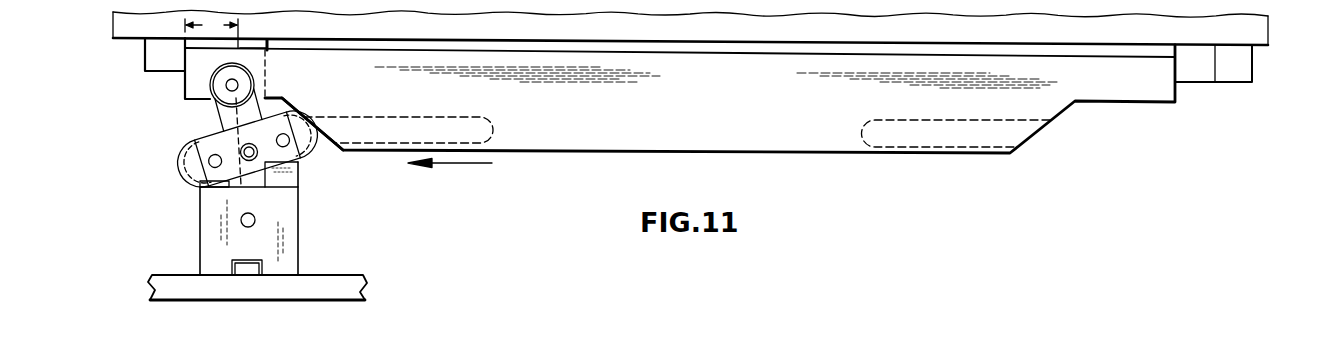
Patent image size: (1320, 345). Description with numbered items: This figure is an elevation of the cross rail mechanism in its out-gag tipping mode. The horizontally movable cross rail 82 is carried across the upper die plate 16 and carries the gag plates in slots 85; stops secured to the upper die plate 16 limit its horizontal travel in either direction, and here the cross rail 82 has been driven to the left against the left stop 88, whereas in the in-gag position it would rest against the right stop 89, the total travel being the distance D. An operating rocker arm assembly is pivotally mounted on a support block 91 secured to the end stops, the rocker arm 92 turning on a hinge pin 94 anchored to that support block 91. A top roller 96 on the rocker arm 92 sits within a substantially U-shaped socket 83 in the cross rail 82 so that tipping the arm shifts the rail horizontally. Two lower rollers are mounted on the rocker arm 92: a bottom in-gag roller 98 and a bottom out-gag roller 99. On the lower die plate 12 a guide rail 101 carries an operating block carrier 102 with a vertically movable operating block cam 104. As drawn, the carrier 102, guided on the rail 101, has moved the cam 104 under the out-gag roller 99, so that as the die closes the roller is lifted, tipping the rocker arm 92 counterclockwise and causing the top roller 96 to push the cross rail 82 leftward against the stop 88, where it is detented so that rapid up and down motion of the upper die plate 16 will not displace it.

The lower die plate 12 is at (343, 282).
The upper die plate 16 is at (560, 33).
The cross rail 82 is at (768, 88).
The U-shaped socket 83 is at (210, 100).
The slots 85 is at (428, 125).
The stop 88 is at (152, 50).
The stop 89 is at (1233, 70).
The support block 91 is at (272, 46).
The rocker arm 92 is at (212, 133).
The hinge pin 94 is at (249, 162).
The top roller 96 is at (207, 79).
The bottom in-gag roller 98 is at (197, 167).
The bottom out-gag roller 99 is at (317, 133).
The guide rail 101 is at (231, 261).
The operating block carrier 102 is at (292, 228).
The operating block cam 104 is at (287, 173).